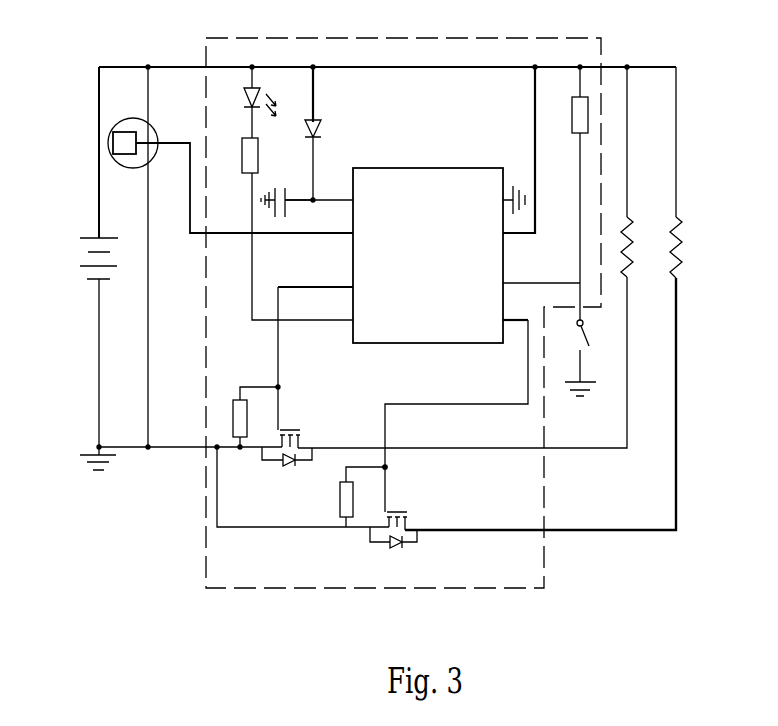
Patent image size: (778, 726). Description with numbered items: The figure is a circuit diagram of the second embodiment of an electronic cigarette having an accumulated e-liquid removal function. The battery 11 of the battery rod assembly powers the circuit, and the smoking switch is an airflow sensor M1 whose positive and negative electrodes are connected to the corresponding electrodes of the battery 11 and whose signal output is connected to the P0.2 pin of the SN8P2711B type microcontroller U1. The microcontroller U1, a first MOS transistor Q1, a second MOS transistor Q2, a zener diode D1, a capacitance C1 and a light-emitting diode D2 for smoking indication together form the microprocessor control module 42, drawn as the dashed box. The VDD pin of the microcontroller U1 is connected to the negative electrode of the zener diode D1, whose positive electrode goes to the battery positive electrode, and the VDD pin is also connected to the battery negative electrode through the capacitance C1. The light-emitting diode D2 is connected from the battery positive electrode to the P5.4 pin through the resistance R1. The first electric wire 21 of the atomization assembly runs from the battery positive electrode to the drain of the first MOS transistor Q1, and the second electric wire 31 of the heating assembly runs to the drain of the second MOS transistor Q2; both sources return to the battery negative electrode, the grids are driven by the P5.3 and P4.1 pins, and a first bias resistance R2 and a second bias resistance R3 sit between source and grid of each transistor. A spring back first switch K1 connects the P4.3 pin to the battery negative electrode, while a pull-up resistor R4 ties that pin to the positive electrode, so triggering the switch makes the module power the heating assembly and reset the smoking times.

The battery 11 is at (83, 258).
The first electric wire 21 is at (641, 251).
The second electric wire 31 is at (692, 251).
The microprocessor control module 42 is at (206, 508).
The airflow sensor M1 is at (145, 135).
The zener diode D1 is at (330, 161).
The light-emitting diode D2 is at (274, 106).
The resistance R1 is at (264, 155).
The first bias resistance R2 is at (249, 403).
The second bias resistance R3 is at (329, 504).
The pull-up resistor R4 is at (566, 115).
The capacitance C1 is at (291, 207).
The microcontroller U1 is at (439, 246).
The first switch K1 is at (591, 355).
The first MOS transistor Q1 is at (287, 462).
The second MOS transistor Q2 is at (393, 544).